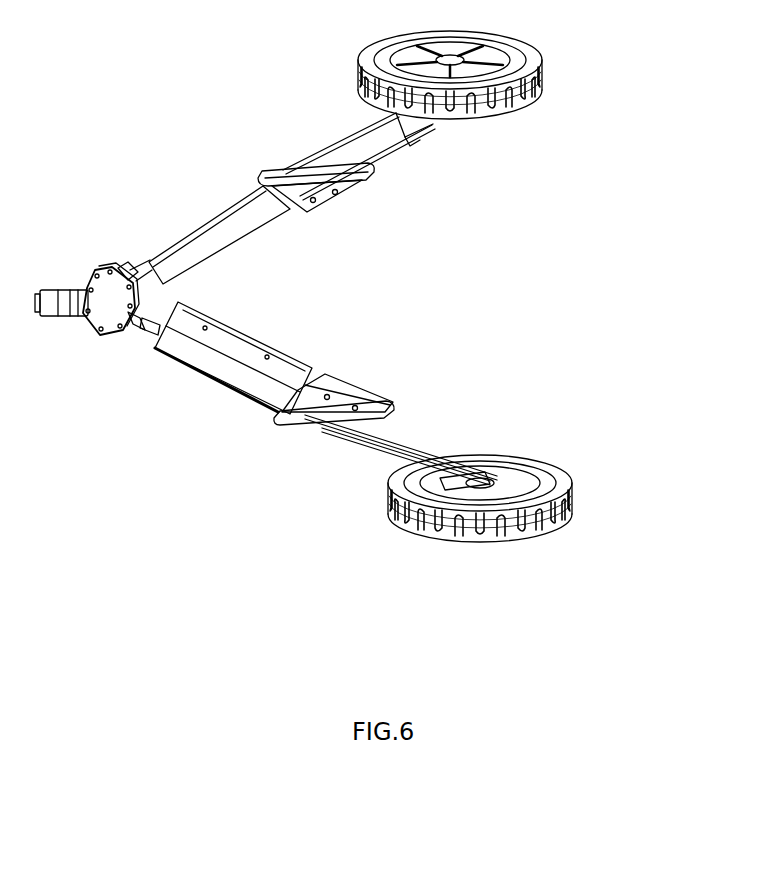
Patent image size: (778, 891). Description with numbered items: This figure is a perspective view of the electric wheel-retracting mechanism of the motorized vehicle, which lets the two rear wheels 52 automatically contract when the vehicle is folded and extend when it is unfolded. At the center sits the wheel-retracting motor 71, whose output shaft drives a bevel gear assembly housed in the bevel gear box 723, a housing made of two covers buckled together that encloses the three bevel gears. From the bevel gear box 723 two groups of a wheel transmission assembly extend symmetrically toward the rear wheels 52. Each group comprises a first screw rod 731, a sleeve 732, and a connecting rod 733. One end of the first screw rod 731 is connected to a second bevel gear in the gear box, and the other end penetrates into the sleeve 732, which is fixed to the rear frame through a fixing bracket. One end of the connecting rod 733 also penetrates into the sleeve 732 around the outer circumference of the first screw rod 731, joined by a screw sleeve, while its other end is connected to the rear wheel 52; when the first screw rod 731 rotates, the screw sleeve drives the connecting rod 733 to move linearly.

The rear wheel 52 is at (540, 70).
The wheel-retracting motor 71 is at (45, 315).
The bevel gear box 723 is at (108, 318).
The first screw rod 731 is at (150, 257).
The sleeve 732 is at (287, 207).
The connecting rod 733 is at (373, 143).